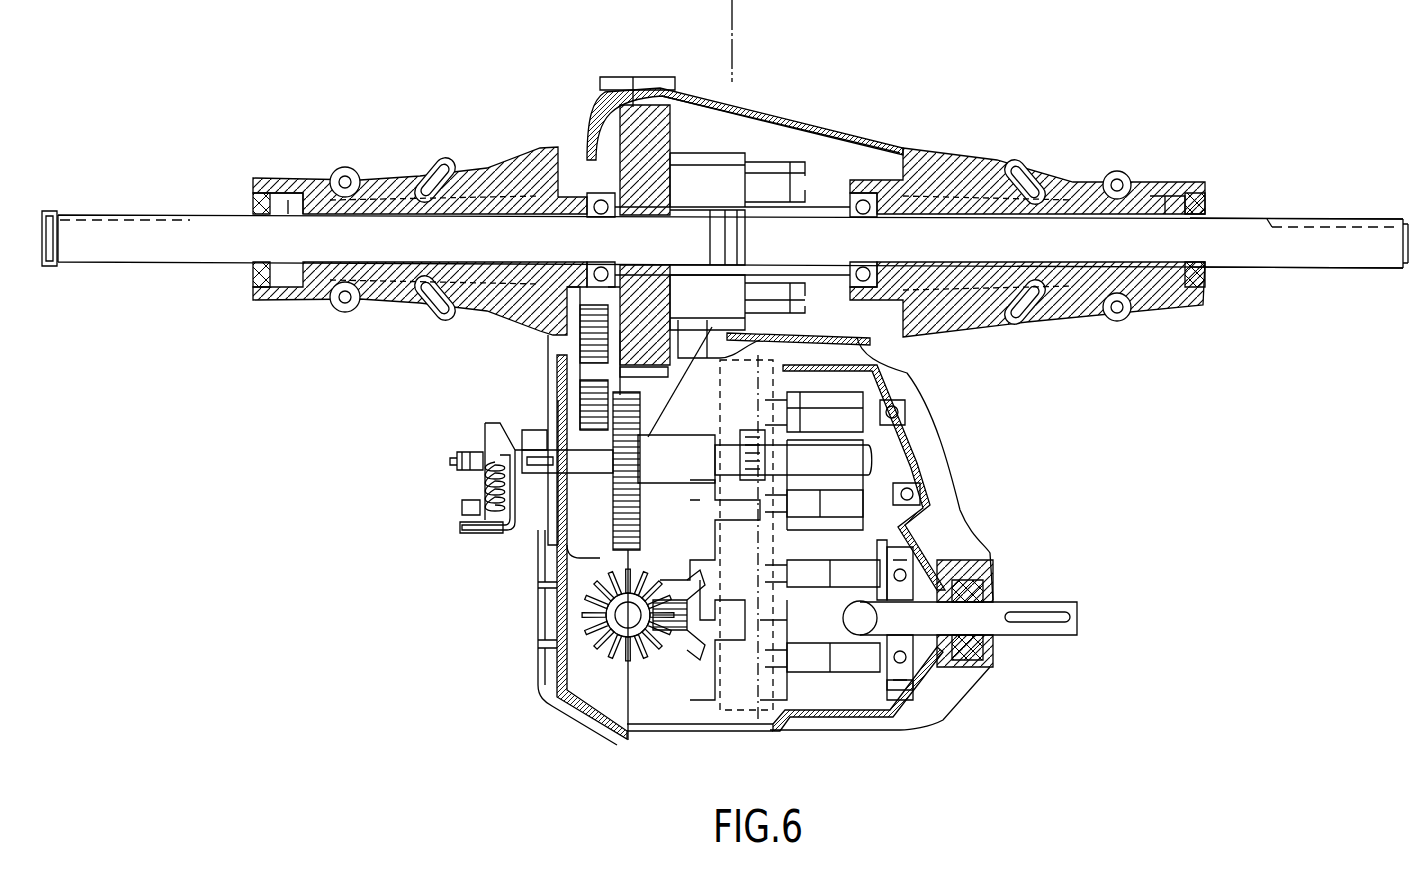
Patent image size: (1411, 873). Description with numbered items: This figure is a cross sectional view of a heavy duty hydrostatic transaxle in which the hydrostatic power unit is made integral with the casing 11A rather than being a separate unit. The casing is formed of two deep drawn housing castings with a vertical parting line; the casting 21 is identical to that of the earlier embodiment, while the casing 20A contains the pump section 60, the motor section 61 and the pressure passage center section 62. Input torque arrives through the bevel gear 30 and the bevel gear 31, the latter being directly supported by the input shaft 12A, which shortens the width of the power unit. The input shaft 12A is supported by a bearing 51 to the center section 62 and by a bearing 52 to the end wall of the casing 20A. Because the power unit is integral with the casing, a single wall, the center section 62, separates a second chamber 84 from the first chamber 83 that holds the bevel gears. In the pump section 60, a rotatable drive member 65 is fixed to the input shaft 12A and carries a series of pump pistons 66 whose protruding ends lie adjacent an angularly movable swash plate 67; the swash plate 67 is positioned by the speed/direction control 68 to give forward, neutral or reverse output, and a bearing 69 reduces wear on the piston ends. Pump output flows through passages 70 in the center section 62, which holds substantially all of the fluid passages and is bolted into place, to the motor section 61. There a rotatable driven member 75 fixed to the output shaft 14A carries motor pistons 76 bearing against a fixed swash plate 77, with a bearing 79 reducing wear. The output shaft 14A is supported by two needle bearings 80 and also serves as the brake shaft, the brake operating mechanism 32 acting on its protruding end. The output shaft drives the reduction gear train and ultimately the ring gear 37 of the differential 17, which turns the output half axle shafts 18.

The casing 11A is at (1200, 190).
The input shaft 12A is at (1073, 600).
The output shaft 14A is at (698, 468).
The differential 17 is at (690, 252).
The output half axle shafts 18 is at (1010, 251).
The casing 20A is at (732, 27).
The housing casting 21 is at (590, 108).
The bevel gear 30 is at (620, 652).
The bevel gear 31 is at (672, 652).
The brake operating mechanism 32 is at (500, 415).
The ring gear 37 is at (625, 150).
The bearing 51 is at (752, 602).
The bearing 52 is at (987, 645).
The pump section 60 is at (958, 716).
The motor section 61 is at (963, 470).
The pressure passage center section 62 is at (720, 705).
The rotatable drive member 65 is at (823, 680).
The pump pistons 66 is at (853, 668).
The swash plate 67 is at (897, 683).
The speed/direction control 68 is at (872, 620).
The bearing 69 is at (895, 565).
The passages 70 is at (745, 530).
The rotatable driven member 75 is at (822, 525).
The motor pistons 76 is at (858, 511).
The fixed swash plate 77 is at (904, 512).
The bearing 79 is at (908, 488).
The needle bearings 80 is at (745, 432).
The first chamber 83 is at (837, 160).
The second chamber 84 is at (840, 702).